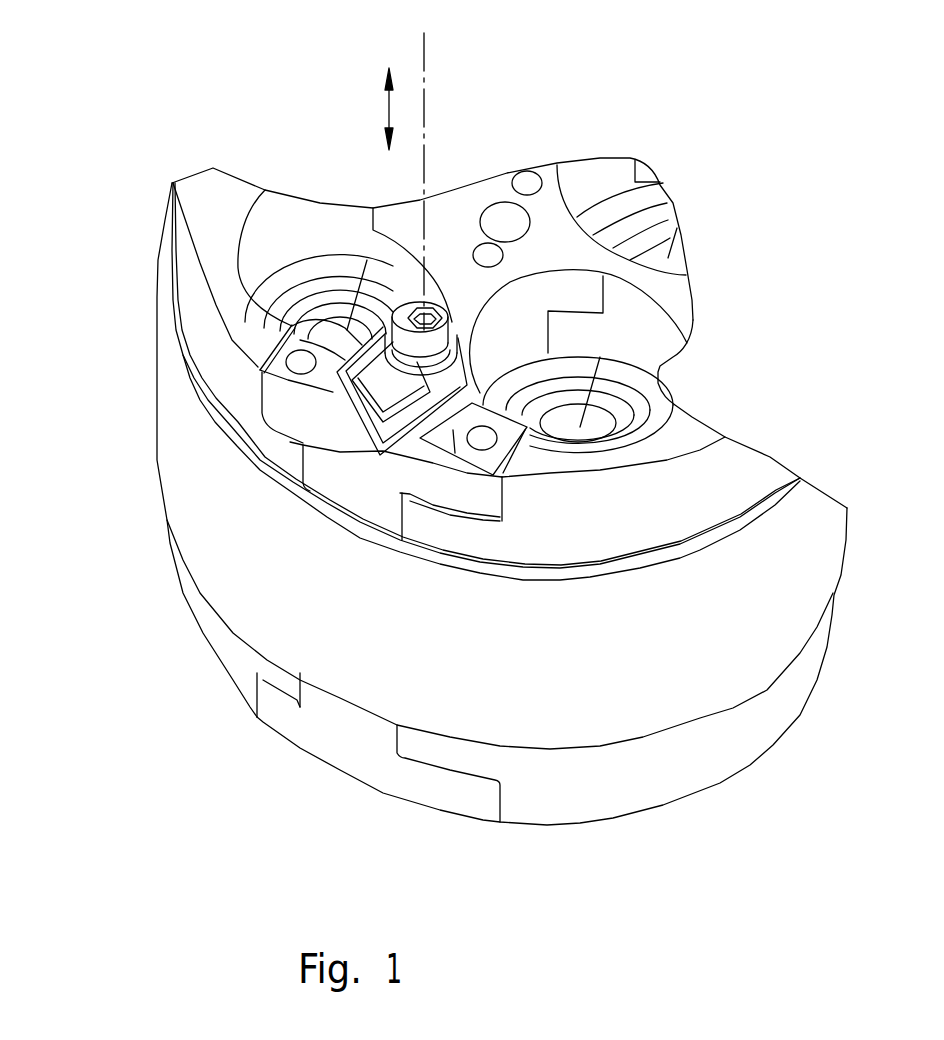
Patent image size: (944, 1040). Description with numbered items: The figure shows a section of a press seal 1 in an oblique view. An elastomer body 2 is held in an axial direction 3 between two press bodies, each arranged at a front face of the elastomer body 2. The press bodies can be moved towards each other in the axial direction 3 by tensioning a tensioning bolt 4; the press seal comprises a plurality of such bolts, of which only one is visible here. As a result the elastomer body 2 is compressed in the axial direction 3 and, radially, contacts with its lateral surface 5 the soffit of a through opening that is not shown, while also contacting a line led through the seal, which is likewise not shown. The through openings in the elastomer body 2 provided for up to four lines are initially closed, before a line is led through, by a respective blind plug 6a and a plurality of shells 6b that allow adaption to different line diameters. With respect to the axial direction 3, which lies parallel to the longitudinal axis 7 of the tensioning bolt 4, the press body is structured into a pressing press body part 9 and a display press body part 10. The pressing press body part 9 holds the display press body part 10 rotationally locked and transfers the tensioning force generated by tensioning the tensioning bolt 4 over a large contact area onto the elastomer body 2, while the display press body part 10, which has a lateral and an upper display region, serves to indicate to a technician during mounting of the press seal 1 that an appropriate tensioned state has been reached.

The press seal 1 is at (148, 134).
The elastomer body 2 is at (178, 425).
The axial direction 3 is at (387, 108).
The tensioning bolt 4 is at (422, 355).
The lateral surface 5 is at (160, 357).
The blind plug 6a is at (577, 435).
The shells 6b is at (592, 417).
The longitudinal axis 7 is at (422, 118).
The pressing press body part 9 is at (355, 468).
The display press body part 10 is at (440, 402).